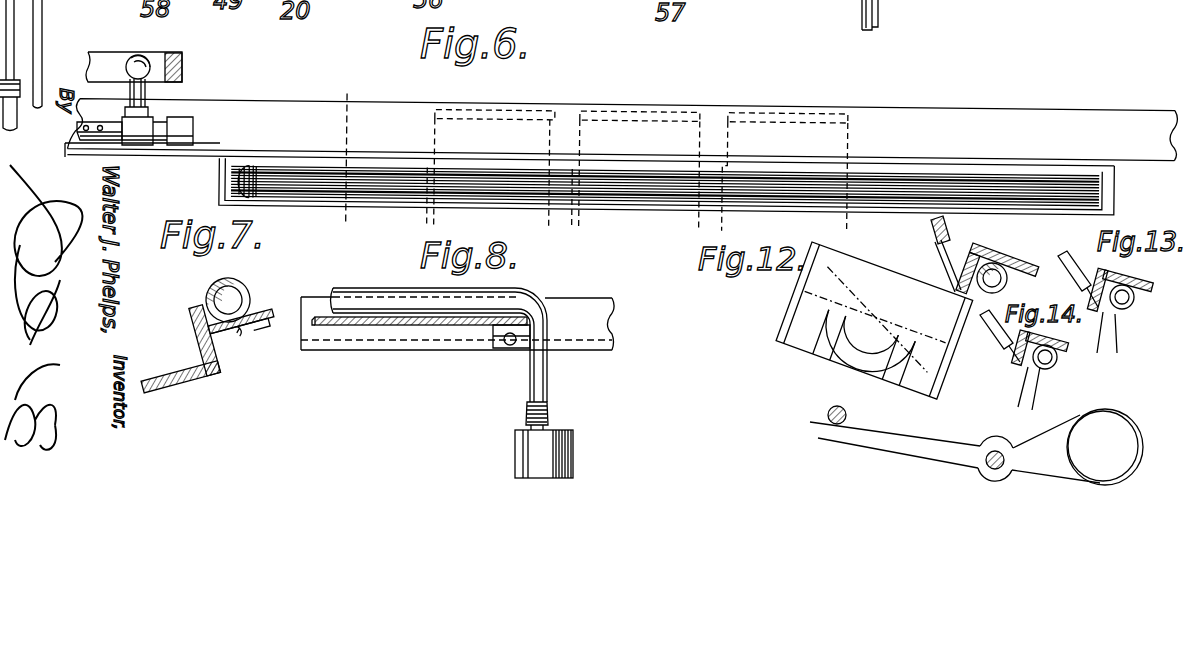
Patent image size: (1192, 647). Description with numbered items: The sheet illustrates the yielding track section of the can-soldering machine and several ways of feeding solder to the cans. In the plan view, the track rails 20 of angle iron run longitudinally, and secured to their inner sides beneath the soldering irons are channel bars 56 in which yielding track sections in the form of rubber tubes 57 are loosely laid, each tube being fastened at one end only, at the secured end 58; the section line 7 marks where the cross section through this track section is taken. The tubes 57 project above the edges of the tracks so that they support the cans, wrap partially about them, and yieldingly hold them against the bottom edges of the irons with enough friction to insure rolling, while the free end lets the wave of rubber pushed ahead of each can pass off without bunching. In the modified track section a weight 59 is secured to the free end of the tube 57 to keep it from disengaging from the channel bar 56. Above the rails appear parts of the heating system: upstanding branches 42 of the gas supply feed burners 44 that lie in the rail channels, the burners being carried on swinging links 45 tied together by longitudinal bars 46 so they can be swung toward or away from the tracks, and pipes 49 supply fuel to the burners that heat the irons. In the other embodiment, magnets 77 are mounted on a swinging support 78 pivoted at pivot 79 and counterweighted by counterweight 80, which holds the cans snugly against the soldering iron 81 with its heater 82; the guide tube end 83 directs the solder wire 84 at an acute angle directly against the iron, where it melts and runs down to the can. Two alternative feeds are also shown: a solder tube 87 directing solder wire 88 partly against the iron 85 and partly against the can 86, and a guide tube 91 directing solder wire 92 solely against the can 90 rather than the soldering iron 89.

In FIG. 6, the section line 7 is at (346, 158).
In FIG. 6, the track rails 20 is at (622, 133).
In FIG. 7, the track rails 20 is at (182, 378).
In FIG. 8, the track rails 20 is at (597, 320).
In FIG. 6, the upstanding branches 42 is at (143, 58).
In FIG. 6, the burners 44 is at (80, 126).
In FIG. 6, the swinging links 45 is at (42, 33).
In FIG. 6, the longitudinal bars 46 is at (112, 60).
In FIG. 6, the pipes 49 is at (866, 8).
In FIG. 6, the channel bars 56 is at (475, 170).
In FIG. 7, the channel bars 56 is at (262, 305).
In FIG. 8, the channel bars 56 is at (385, 330).
In FIG. 6, the rubber tubes 57 is at (405, 183).
In FIG. 7, the rubber tubes 57 is at (240, 283).
In FIG. 8, the rubber tubes 57 is at (390, 302).
In FIG. 6, the secured end 58 is at (252, 165).
In FIG. 8, the weight 59 is at (568, 460).
In FIG. 12, the magnets 77 is at (883, 392).
In FIG. 12, the swinging support 78 is at (930, 443).
In FIG. 12, the pivot 79 is at (997, 451).
In FIG. 12, the counterweight 80 is at (1105, 447).
In FIG. 12, the soldering iron 81 is at (983, 252).
In FIG. 12, the heater 82 is at (1008, 268).
In FIG. 12, the guide tube end 83 is at (931, 224).
In FIG. 12, the solder wire 84 is at (942, 263).
In FIG. 13, the iron 85 is at (1150, 275).
In FIG. 13, the can 86 is at (1108, 344).
In FIG. 13, the solder tube 87 is at (1068, 255).
In FIG. 13, the solder wire 88 is at (1108, 290).
In FIG. 14, the soldering iron 89 is at (1062, 345).
In FIG. 14, the can 90 is at (1030, 395).
In FIG. 14, the guide tube 91 is at (989, 330).
In FIG. 14, the solder wire 92 is at (1017, 360).